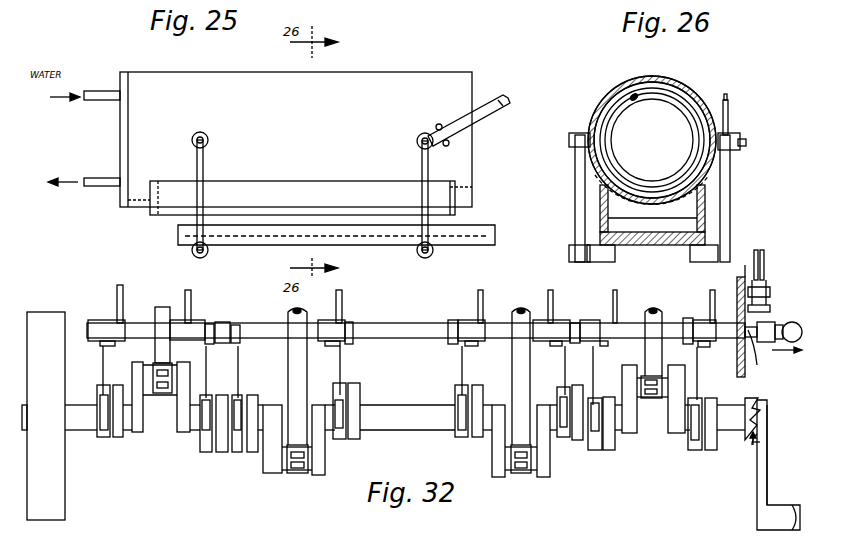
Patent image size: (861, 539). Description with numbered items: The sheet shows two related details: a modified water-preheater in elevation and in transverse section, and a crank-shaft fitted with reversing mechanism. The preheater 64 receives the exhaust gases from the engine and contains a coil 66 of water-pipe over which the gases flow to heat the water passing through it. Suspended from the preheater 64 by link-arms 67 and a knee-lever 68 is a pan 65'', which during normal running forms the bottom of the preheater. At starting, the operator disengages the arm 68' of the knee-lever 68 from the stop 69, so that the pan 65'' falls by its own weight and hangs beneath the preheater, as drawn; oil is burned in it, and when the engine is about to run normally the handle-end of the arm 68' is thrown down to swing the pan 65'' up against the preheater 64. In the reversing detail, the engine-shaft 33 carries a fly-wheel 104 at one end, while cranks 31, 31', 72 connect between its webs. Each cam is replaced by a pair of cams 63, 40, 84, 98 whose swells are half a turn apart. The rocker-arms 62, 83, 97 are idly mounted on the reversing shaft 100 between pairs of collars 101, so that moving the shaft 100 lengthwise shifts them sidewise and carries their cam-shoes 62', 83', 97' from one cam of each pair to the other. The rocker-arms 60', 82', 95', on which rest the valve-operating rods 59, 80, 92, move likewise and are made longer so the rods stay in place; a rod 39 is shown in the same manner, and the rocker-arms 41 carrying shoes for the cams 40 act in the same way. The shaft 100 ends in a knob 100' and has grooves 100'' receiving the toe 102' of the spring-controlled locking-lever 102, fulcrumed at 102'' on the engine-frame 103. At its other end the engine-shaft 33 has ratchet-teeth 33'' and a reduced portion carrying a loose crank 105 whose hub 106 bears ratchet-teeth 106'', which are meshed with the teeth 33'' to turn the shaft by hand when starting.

In FIG. 25, the water-preheater 64 is at (376, 83).
In FIG. 26, the water-preheater 64 is at (684, 85).
In FIG. 25, the pan 65'' is at (336, 248).
In FIG. 26, the pan 65'' is at (652, 229).
In FIG. 26, the coil of water-pipe 66 is at (661, 101).
In FIG. 25, the link-arms 67 is at (204, 165).
In FIG. 26, the link-arms 67 is at (575, 190).
In FIG. 25, the knee-lever 68 is at (403, 195).
In FIG. 26, the knee-lever 68 is at (742, 197).
In FIG. 25, the arm of the knee-lever 68' is at (473, 120).
In FIG. 26, the arm of the knee-lever 68' is at (746, 114).
In FIG. 25, the stop 69 is at (449, 144).
In FIG. 32, the fly-wheel 104 is at (43, 315).
In FIG. 32, the reversing shaft 100 is at (416, 321).
In FIG. 32, the rocker-arm 60' is at (211, 316).
In FIG. 32, the collars 101 is at (100, 342).
In FIG. 32, the rocker-arms 41 is at (160, 433).
In FIG. 32, the valve-operating rod 59 is at (124, 300).
In FIG. 32, the rod 39 is at (187, 303).
In FIG. 32, the valve-operating rod 80 is at (473, 303).
In FIG. 32, the rocker-arm 82' is at (597, 316).
In FIG. 32, the valve-operating rod 92 is at (547, 302).
In FIG. 32, the rocker-arm 95' is at (574, 320).
In FIG. 32, the engine-shaft 33 is at (433, 432).
In FIG. 32, the connecting rod 31 is at (161, 358).
In FIG. 32, the connecting rod 31' is at (289, 391).
In FIG. 32, the connecting rod 72 is at (527, 375).
In FIG. 32, the rocker-arm 62 is at (221, 370).
In FIG. 32, the cam-shoe 62' is at (232, 411).
In FIG. 32, the cams 63 is at (117, 440).
In FIG. 32, the cams 40 is at (252, 452).
In FIG. 32, the rocker-arm 83 is at (572, 373).
In FIG. 32, the cam-shoe 83' is at (572, 414).
In FIG. 32, the cams 84 is at (478, 436).
In FIG. 32, the rocker-arm 97 is at (551, 370).
In FIG. 32, the cam-shoe 97' is at (605, 375).
In FIG. 32, the cams 98 is at (607, 452).
In FIG. 32, the knob 100' is at (769, 327).
In FIG. 32, the circumferential grooves 100'' is at (764, 361).
In FIG. 32, the locking-lever 102 is at (775, 313).
In FIG. 32, the toe 102' is at (775, 292).
In FIG. 32, the fulcrum 102'' is at (780, 267).
In FIG. 32, the engine-frame 103 is at (743, 278).
In FIG. 32, the hub 106 is at (771, 417).
In FIG. 32, the ratchet-teeth 33'' is at (737, 452).
In FIG. 32, the ratchet-teeth 106'' is at (736, 472).
In FIG. 32, the crank 105 is at (766, 473).